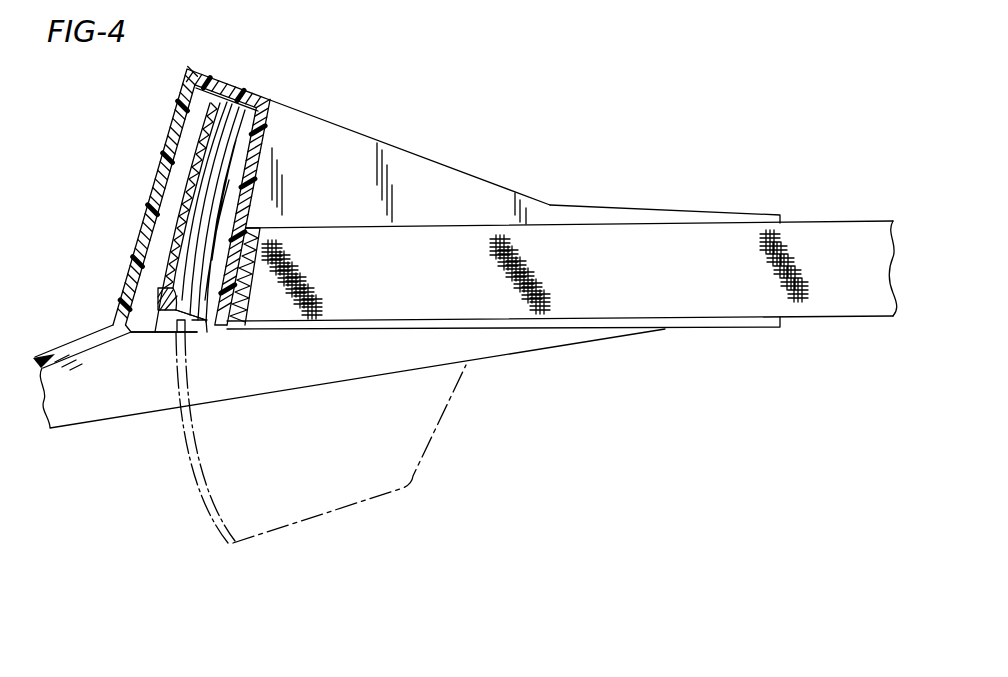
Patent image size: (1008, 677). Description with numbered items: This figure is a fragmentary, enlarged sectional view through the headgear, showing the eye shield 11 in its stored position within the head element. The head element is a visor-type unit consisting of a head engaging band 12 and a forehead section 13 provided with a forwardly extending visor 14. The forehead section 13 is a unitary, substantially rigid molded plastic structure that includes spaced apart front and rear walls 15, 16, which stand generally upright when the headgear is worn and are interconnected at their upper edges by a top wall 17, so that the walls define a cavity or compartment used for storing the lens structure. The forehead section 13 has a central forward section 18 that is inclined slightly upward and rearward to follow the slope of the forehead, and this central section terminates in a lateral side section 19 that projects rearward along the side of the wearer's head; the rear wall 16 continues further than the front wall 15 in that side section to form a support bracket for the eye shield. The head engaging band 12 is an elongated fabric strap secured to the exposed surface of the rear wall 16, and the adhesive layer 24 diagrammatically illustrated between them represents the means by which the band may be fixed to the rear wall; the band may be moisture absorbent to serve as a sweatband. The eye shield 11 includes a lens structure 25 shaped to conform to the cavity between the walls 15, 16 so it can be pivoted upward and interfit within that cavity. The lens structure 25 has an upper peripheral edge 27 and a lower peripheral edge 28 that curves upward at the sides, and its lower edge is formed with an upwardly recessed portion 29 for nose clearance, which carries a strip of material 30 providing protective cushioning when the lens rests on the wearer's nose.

The eye shield 11 is at (142, 306).
The head engaging band 12 is at (845, 211).
The forehead section 13 is at (165, 110).
The visor 14 is at (62, 346).
The front wall 15 is at (160, 161).
The rear wall 16 is at (253, 213).
The top wall 17 is at (214, 88).
The central forward section 18 is at (147, 208).
The lateral side section 19 is at (667, 208).
The ring 24 is at (250, 228).
The lens structure 25 is at (157, 245).
The upper peripheral edge 27 is at (218, 105).
The lower peripheral edge 28 is at (172, 345).
The recessed portion 29 is at (152, 320).
The strip of material 30 is at (205, 333).